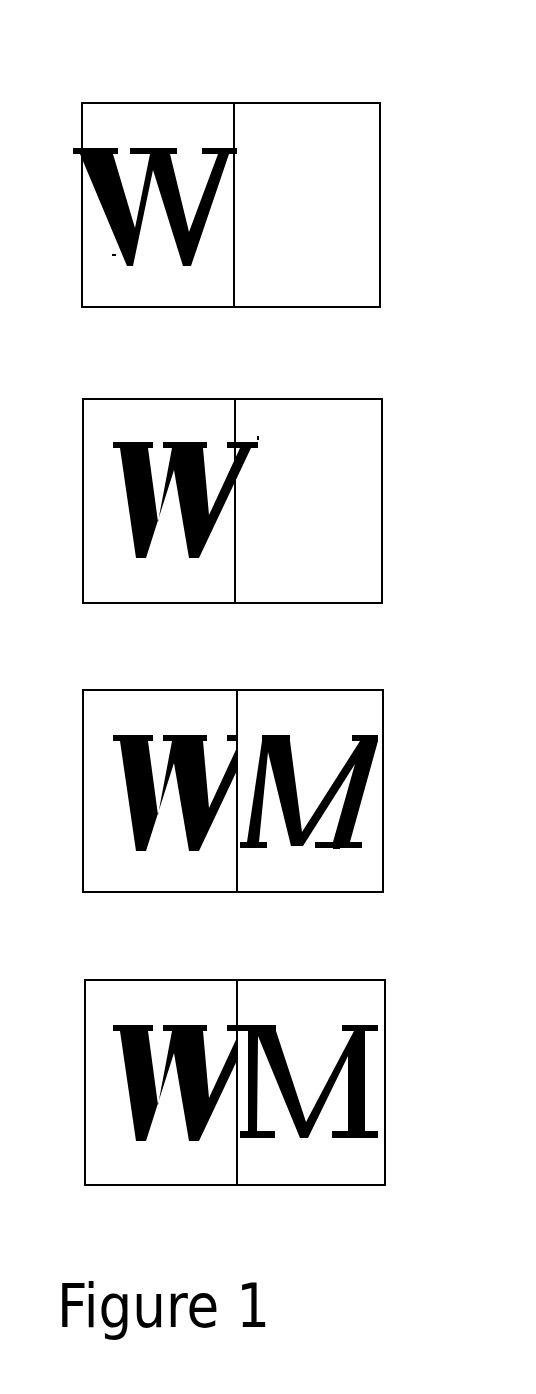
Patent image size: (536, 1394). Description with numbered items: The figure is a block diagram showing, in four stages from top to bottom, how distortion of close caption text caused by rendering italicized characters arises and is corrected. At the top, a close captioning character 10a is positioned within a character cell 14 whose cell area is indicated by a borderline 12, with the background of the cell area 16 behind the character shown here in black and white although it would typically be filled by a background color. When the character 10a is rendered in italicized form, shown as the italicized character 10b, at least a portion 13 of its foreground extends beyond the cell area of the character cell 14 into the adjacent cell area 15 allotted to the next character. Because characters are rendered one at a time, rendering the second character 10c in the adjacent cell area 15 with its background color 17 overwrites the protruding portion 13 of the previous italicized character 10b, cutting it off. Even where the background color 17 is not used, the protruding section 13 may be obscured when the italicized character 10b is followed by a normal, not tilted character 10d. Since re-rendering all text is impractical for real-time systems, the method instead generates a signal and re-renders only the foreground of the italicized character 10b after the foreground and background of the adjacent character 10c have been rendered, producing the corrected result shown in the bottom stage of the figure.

The close captioning character 10a is at (107, 143).
The italicized character 10b is at (183, 440).
The second character 10c is at (378, 720).
The normal not tilted character 10d is at (358, 1017).
The borderline 12 is at (236, 117).
The protruding portion of the character 13 is at (258, 435).
The character cell 14 is at (205, 103).
The adjacent cell area 15 is at (380, 103).
The cell area background 16 is at (115, 255).
The background color 17 is at (337, 848).